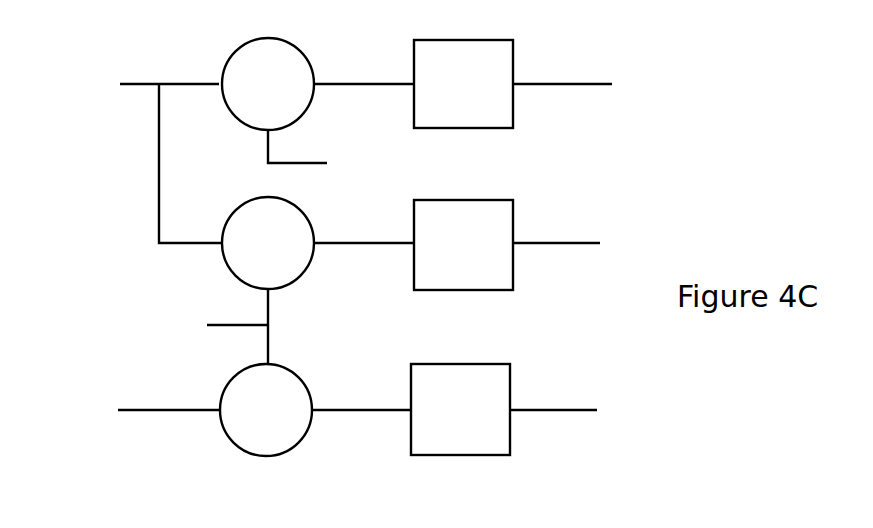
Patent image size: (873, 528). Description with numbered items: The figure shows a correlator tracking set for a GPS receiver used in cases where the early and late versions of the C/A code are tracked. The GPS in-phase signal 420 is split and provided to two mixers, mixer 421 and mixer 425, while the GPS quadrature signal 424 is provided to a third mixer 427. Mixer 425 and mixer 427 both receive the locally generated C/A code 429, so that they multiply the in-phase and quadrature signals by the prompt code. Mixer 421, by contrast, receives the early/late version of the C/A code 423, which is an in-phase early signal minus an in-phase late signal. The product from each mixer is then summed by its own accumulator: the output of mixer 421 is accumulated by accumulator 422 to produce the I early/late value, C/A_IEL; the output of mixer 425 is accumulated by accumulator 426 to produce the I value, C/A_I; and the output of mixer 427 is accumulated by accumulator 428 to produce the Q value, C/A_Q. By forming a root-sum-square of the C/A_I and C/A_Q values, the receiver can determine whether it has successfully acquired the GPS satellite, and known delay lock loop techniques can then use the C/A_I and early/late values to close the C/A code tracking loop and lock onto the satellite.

The GPS in-phase signal 420 is at (132, 148).
The mixer 421 is at (316, 62).
The accumulator 422 is at (513, 55).
The early/late version of C/A code 423 is at (328, 175).
The GPS quadrature signal 424 is at (119, 418).
The mixer 425 is at (287, 290).
The accumulator 426 is at (487, 290).
The mixer 427 is at (297, 448).
The accumulator 428 is at (482, 455).
The locally generated C/A code 429 is at (206, 332).